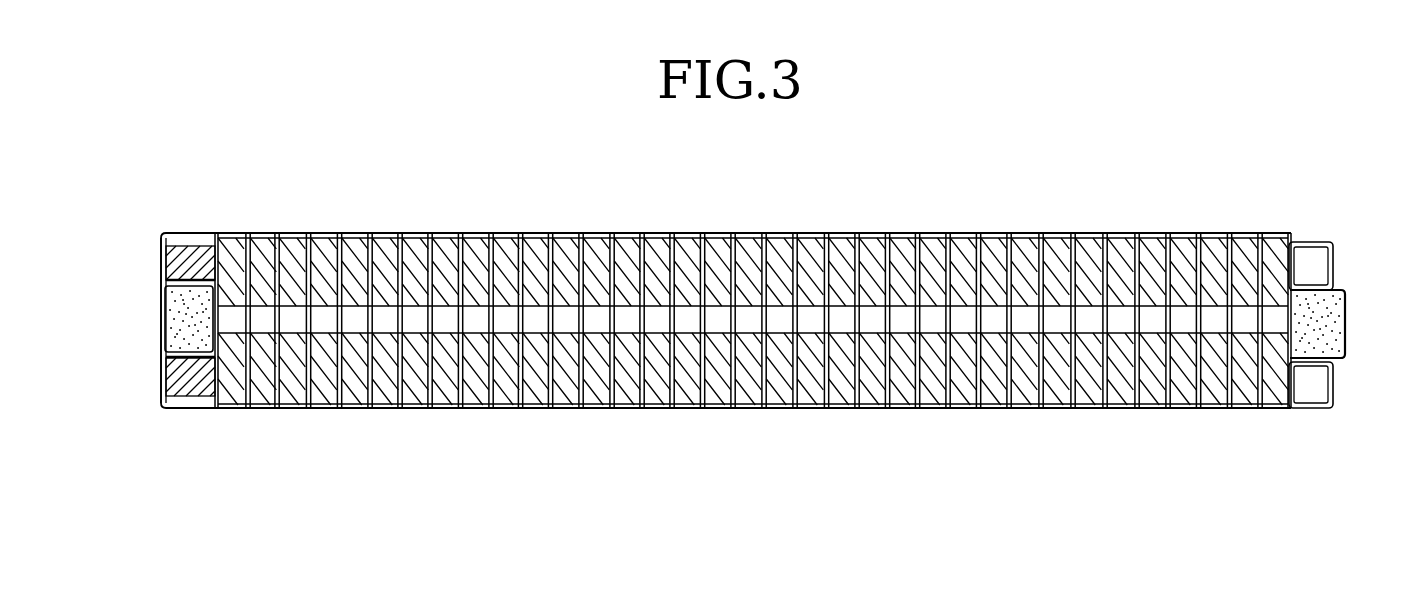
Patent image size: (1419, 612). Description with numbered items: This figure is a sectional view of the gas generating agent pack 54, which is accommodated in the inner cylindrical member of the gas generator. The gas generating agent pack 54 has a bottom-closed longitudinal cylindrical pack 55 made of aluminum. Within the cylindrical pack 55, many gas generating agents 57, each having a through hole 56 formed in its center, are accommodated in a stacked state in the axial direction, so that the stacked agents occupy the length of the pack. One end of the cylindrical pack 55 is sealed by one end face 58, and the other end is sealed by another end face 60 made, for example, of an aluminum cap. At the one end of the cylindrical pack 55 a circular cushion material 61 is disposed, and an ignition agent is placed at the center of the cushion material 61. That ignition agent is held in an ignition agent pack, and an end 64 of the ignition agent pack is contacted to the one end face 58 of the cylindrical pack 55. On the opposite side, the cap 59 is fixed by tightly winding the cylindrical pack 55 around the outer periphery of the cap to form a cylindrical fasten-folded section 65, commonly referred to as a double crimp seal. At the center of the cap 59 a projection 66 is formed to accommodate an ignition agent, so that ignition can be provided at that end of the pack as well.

The gas generating agent pack 54 is at (906, 236).
The cylindrical pack 55 is at (483, 238).
The through hole 56 is at (625, 336).
The gas generating agents 57 is at (811, 392).
The end face 58 is at (162, 294).
The cap 59 is at (1312, 250).
The end face 60 is at (1310, 268).
The cushion material 61 is at (186, 252).
The end of the ignition agent pack 64 is at (176, 332).
The fasten-folded section 65 is at (1304, 410).
The projection 66 is at (1337, 292).